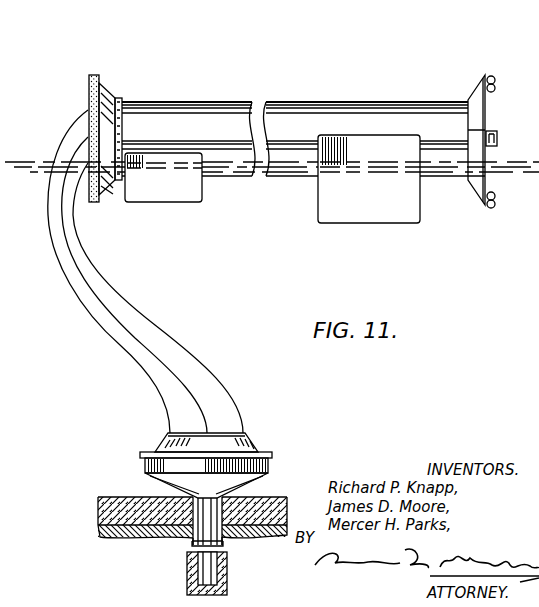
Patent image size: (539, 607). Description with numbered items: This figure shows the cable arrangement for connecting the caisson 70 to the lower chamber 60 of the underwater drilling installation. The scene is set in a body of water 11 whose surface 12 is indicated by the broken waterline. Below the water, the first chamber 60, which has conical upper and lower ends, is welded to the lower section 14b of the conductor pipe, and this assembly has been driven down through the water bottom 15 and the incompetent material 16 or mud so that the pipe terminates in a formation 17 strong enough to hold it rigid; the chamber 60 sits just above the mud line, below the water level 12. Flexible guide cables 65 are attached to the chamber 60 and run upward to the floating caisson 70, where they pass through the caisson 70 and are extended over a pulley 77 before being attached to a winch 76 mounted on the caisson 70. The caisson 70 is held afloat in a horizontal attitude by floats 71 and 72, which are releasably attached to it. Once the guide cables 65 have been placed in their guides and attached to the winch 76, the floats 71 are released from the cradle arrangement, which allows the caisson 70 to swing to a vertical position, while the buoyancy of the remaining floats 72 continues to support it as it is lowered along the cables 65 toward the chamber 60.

The body of water 11 is at (275, 306).
The surface 12 is at (34, 160).
The lower section 14b is at (217, 560).
The water bottom 15 is at (122, 497).
The incompetent material 16 is at (98, 514).
The formation 17 is at (152, 563).
The first chamber 60 is at (273, 455).
The flexible guide cables 65 is at (164, 324).
The caisson 70 is at (315, 102).
The floats 71 is at (166, 202).
The floats 72 is at (372, 223).
The winch 76 is at (494, 77).
The pulley 77 is at (487, 106).